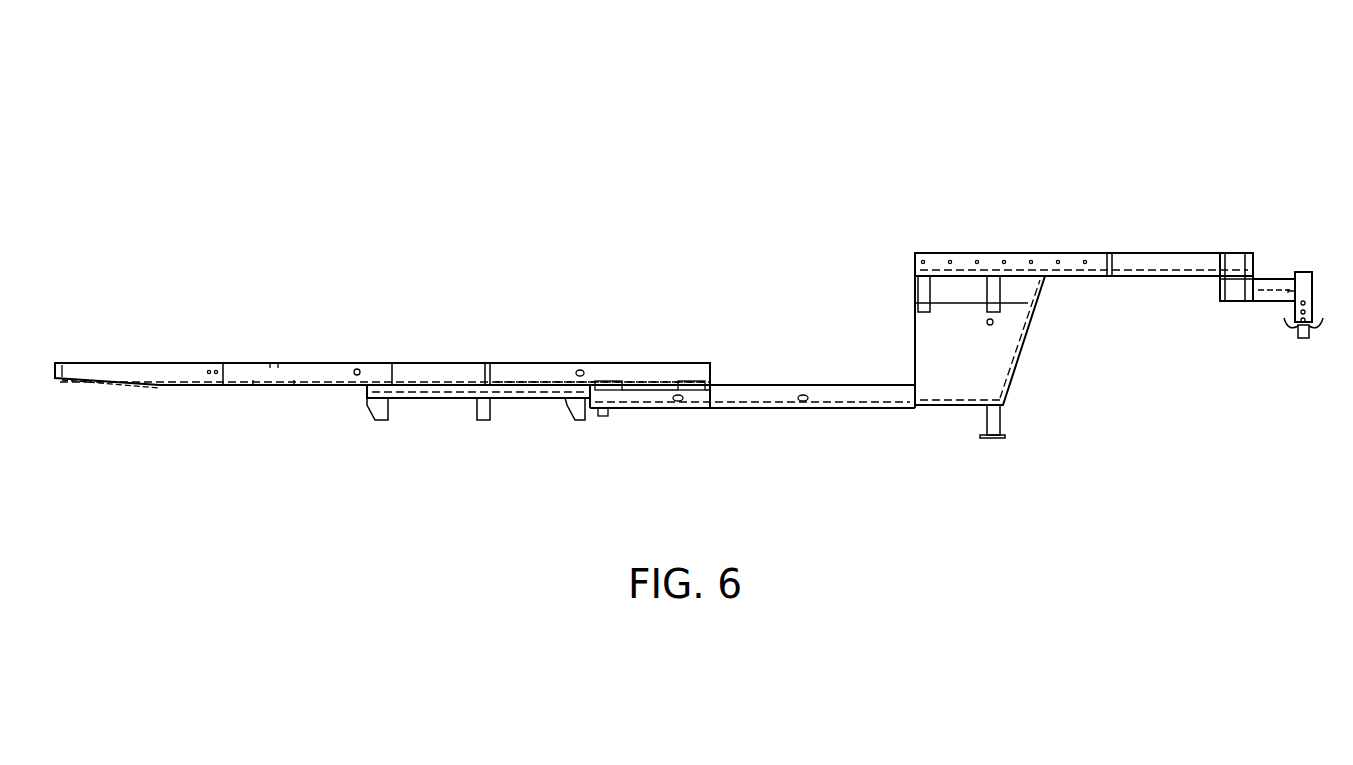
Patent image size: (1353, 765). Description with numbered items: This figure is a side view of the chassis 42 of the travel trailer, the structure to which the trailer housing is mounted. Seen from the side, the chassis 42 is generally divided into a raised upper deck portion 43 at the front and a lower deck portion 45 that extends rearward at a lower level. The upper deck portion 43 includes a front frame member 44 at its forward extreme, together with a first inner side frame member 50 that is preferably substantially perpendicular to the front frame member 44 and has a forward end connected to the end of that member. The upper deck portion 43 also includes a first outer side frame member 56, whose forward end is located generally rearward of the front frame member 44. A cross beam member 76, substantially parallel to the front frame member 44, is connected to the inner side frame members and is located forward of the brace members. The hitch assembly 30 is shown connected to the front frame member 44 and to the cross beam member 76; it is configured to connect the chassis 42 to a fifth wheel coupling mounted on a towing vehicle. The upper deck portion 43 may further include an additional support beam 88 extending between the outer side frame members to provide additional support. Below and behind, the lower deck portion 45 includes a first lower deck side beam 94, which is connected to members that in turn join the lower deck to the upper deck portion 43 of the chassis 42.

The chassis 42 is at (752, 120).
The upper deck portion 43 is at (1121, 285).
The front frame member 44 is at (1250, 253).
The lower deck portion 45 is at (486, 472).
The first inner side frame member 50 is at (1155, 253).
The first outer side frame member 56 is at (1017, 253).
The cross beam member 76 is at (1223, 253).
The hitch assembly 30 is at (1268, 291).
The support beam 88 is at (983, 382).
The first lower deck side beam 94 is at (648, 375).